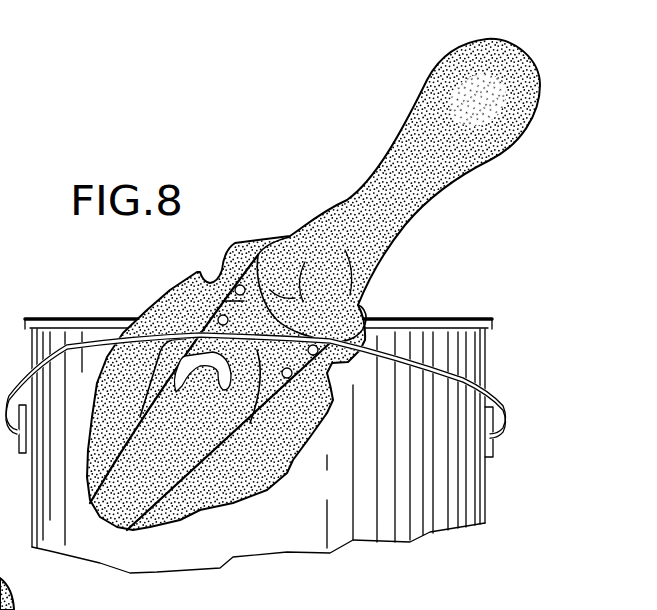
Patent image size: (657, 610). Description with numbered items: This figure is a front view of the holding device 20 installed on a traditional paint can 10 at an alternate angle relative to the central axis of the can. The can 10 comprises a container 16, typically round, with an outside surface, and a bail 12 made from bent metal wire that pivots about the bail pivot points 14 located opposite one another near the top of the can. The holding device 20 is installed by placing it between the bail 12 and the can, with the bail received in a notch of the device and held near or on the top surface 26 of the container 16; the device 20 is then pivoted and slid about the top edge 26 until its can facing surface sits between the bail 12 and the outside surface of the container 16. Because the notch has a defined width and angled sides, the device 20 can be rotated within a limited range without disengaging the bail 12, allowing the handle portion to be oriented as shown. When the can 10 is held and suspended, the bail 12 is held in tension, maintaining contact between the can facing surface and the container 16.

The paint can 10 is at (279, 412).
The bail 12 is at (490, 393).
The bail pivot points 14 is at (496, 436).
The container 16 is at (313, 533).
The holding device 20 is at (411, 81).
The top surface 26 is at (97, 318).